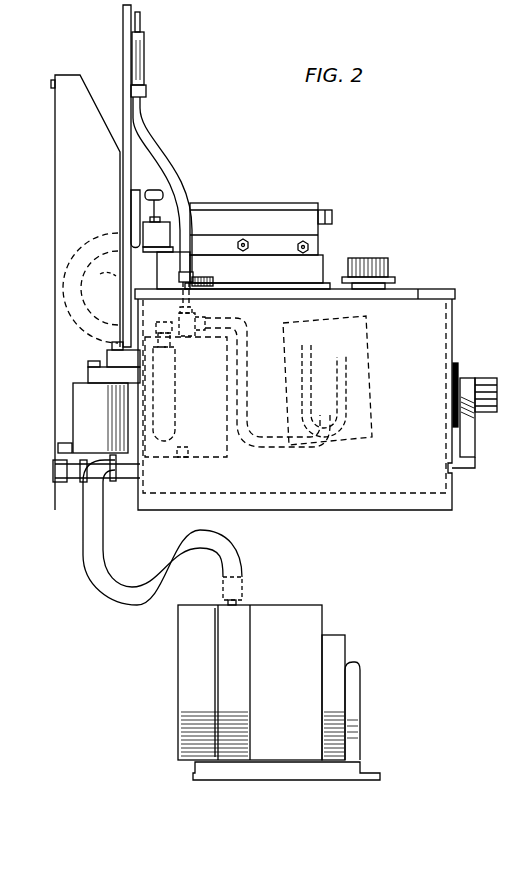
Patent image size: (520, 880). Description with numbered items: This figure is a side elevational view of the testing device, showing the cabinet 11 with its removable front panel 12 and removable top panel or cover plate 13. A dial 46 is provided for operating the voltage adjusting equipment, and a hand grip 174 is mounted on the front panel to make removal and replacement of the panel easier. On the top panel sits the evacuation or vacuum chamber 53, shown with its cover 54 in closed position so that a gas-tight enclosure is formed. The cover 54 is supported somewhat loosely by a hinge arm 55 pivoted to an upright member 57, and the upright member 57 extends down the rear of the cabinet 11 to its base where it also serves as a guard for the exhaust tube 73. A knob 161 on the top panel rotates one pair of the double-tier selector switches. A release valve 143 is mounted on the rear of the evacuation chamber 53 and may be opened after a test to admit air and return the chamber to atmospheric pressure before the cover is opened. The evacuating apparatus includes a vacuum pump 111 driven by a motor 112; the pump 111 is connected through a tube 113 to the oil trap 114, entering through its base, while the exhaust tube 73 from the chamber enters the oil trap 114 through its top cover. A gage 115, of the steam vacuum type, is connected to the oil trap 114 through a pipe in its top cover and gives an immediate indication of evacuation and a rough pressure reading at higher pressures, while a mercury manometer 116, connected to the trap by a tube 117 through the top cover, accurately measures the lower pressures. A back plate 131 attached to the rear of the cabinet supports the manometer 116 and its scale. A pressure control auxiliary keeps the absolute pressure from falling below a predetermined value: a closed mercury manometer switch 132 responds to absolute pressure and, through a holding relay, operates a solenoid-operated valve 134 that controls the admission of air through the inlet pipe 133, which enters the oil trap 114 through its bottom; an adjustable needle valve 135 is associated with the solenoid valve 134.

The cabinet 11 is at (450, 508).
The removable front panel 12 is at (453, 329).
The top panel or cover plate 13 is at (442, 288).
The dial 46 is at (487, 377).
The evacuation or vacuum chamber 53 is at (318, 242).
The cover 54 is at (307, 203).
The hinge arm 55 is at (265, 238).
The upright member 57 is at (58, 355).
The exhaust tube 73 is at (90, 288).
The vacuum pump 111 is at (288, 607).
The motor 112 is at (355, 682).
The tube 113 is at (103, 558).
The oil trap 114 is at (212, 455).
The gage 115 is at (215, 282).
The mercury manometer 116 is at (141, 16).
The tube 117 is at (168, 160).
The back plate 131 is at (122, 27).
The closed mercury manometer switch 132 is at (350, 392).
The inlet pipe 133 is at (60, 482).
The solenoid-operated valve 134 is at (78, 420).
The adjustable needle valve 135 is at (65, 448).
The release valve 143 is at (158, 203).
The knob 161 is at (388, 266).
The hand grip 174 is at (478, 452).